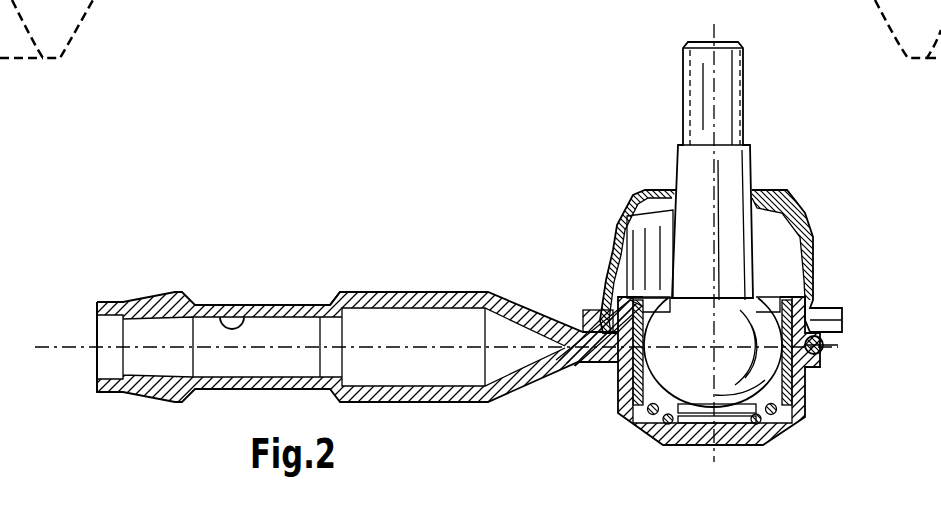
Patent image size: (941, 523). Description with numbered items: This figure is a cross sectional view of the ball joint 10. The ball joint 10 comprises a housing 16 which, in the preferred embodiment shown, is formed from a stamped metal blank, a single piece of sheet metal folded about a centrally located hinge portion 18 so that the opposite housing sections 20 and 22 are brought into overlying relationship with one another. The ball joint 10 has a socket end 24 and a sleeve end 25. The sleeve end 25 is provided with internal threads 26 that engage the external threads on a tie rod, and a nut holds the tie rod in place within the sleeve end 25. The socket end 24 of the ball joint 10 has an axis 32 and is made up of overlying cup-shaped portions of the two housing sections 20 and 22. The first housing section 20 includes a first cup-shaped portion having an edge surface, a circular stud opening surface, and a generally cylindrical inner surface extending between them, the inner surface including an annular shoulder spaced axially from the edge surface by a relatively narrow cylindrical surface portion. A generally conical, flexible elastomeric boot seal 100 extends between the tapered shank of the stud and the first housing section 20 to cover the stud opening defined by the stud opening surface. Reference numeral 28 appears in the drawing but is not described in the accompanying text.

The ball joint 10 is at (540, 210).
The housing 16 is at (471, 276).
The hinge portion 18 is at (818, 353).
The first housing section 20 is at (112, 302).
The second housing section 22 is at (108, 392).
The socket end 24 is at (607, 437).
The sleeve end 25 is at (445, 433).
The internal threads 26 is at (243, 322).
The shoulder 28 is at (290, 303).
The axis 32 is at (712, 162).
The boot seal 100 is at (780, 188).